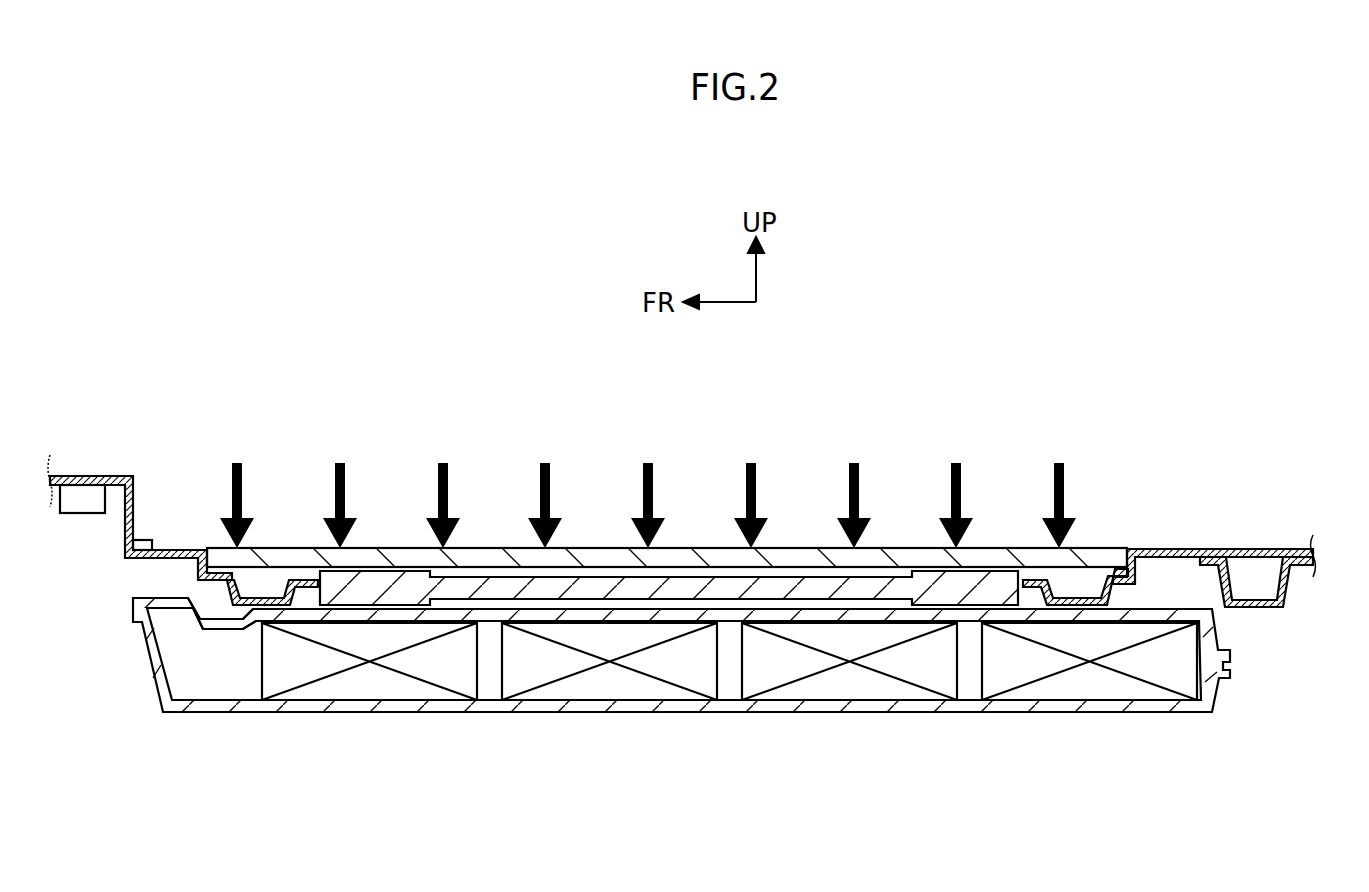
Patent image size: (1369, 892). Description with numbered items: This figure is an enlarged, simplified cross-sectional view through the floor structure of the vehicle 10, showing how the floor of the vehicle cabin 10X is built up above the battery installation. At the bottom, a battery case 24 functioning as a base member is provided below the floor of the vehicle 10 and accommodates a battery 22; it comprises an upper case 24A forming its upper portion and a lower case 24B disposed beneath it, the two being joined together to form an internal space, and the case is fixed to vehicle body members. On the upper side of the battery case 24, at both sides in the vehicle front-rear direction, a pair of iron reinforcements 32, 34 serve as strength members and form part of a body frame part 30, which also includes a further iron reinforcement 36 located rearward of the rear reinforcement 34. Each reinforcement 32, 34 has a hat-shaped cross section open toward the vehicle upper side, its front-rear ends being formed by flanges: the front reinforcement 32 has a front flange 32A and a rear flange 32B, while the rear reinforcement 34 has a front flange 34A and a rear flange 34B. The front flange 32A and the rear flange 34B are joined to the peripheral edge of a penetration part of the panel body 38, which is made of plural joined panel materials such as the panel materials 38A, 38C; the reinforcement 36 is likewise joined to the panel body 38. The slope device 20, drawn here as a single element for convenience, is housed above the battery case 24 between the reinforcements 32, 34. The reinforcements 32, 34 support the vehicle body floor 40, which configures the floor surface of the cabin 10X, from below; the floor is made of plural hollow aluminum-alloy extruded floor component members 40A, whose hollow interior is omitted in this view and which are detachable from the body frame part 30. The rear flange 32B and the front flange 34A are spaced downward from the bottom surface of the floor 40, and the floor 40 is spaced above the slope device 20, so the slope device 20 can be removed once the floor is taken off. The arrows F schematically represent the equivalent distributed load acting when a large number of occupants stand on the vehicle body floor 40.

The vehicle 10 is at (1252, 328).
The vehicle cabin 10X is at (1133, 362).
The slope device 20 is at (713, 576).
The battery 22 is at (363, 685).
The battery case 24 is at (717, 718).
The upper case 24A is at (1217, 623).
The lower case 24B is at (1215, 697).
The body frame part 30 is at (153, 572).
The front reinforcement 32 is at (223, 602).
The front flange 32A is at (212, 585).
The rear flange 32B is at (302, 579).
The rear reinforcement 34 is at (1119, 594).
The front flange 34A is at (1038, 579).
The rear flange 34B is at (1130, 589).
The reinforcement 36 is at (1289, 589).
The panel body 38 is at (703, 520).
The panel material 38A is at (165, 549).
The panel material 38C is at (1233, 549).
The vehicle body floor 40 is at (784, 547).
The floor component member 40A is at (823, 548).
The arrow (equivalent distributed load) F is at (242, 481).